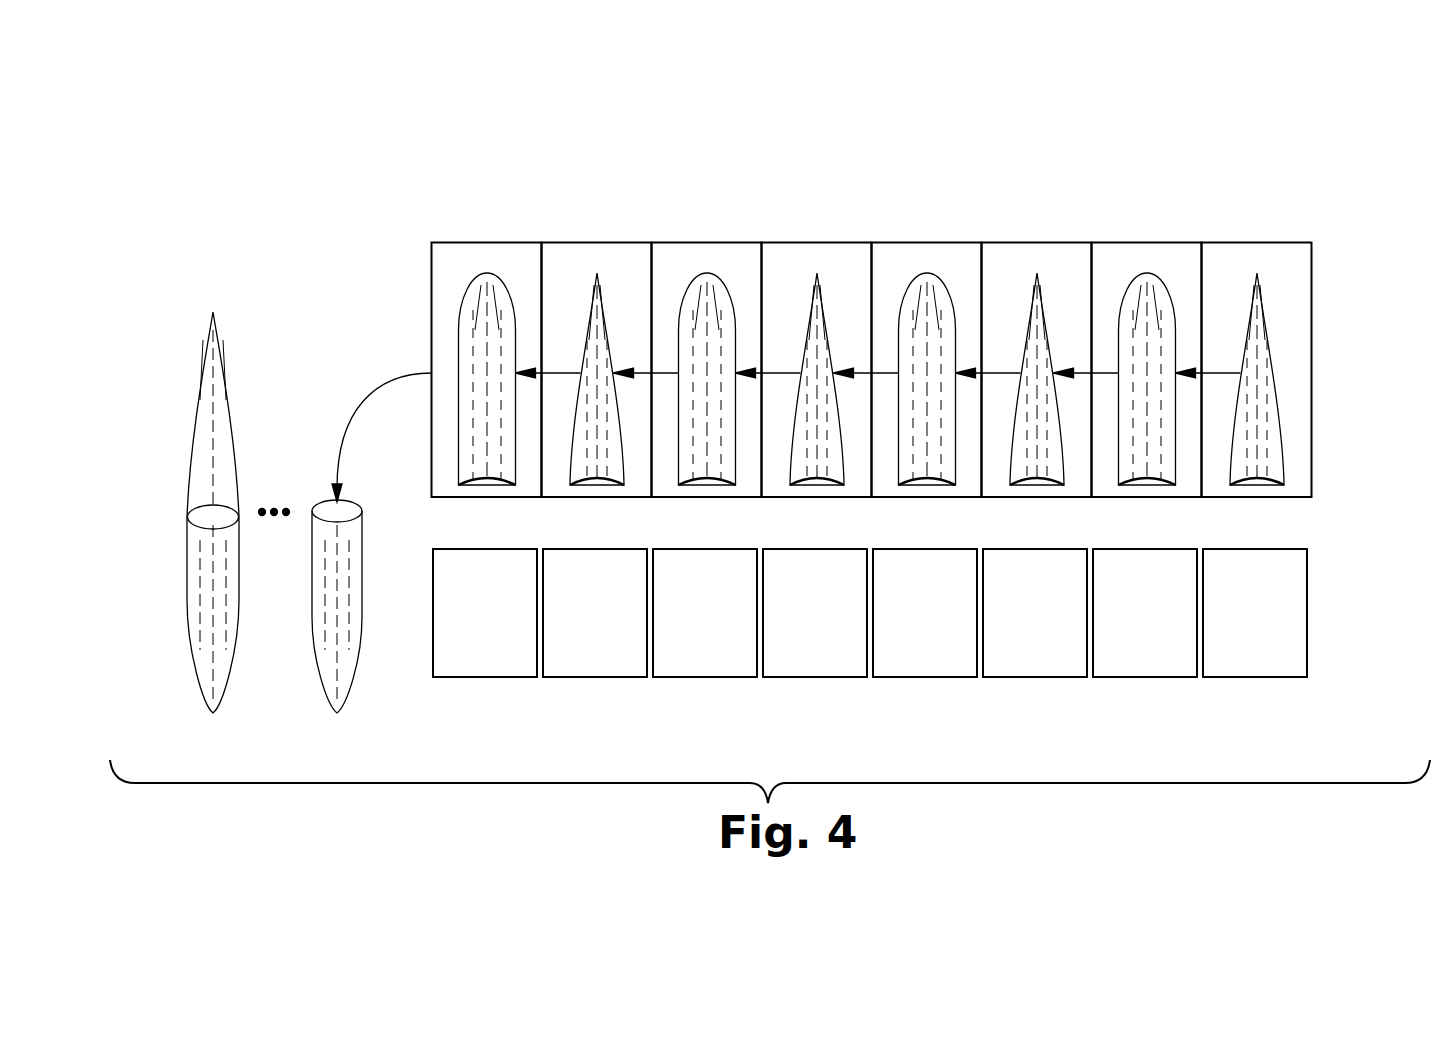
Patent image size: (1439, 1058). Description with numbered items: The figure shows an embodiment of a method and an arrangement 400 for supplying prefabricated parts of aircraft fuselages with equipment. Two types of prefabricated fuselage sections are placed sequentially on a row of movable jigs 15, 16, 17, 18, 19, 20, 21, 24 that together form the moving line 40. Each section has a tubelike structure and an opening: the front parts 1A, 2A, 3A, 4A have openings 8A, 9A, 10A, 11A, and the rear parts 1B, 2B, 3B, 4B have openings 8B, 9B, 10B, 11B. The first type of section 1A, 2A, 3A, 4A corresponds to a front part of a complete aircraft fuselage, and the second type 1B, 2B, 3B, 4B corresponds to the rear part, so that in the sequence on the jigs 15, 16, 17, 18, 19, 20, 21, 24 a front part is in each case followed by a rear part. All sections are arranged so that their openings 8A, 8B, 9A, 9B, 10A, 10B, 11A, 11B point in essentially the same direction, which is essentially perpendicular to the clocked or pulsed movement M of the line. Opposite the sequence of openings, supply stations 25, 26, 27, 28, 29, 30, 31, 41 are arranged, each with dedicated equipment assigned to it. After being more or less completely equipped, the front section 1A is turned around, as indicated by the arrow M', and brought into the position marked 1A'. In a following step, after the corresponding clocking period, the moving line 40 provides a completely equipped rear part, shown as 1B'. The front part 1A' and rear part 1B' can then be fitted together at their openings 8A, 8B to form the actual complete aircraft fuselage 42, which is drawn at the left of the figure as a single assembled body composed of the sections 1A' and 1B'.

The test arrangement 400 is at (381, 228).
The projectile 42 is at (179, 426).
The rear part of the aircraft fuselage 1B' is at (243, 420).
The front part of the aircraft fuselage 1A' is at (274, 606).
The arrow indicating turning around M' is at (382, 437).
The moving line 40 is at (1322, 462).
The movable jig 15 is at (518, 270).
The movable jig 16 is at (628, 270).
The movable jig 17 is at (738, 270).
The movable jig 18 is at (848, 270).
The movable jig 19 is at (958, 270).
The movable jig 20 is at (1068, 270).
The movable jig 21 is at (1178, 270).
The movable jig 24 is at (1288, 270).
The opening 8A is at (479, 482).
The opening 8B is at (589, 482).
The opening 9A is at (699, 482).
The opening 9B is at (809, 482).
The opening 10A is at (919, 482).
The opening 10B is at (1029, 482).
The opening 11A is at (1139, 482).
The opening 11B is at (1249, 482).
The front fuselage section 1A is at (487, 379).
The rear fuselage section 1B is at (597, 379).
The front fuselage section 2A is at (690, 362).
The rear fuselage section 2B is at (800, 445).
The front fuselage section 3A is at (910, 362).
The rear fuselage section 3B is at (1020, 445).
The front fuselage section 4A is at (1130, 362).
The rear fuselage section 4B is at (1240, 445).
The clocked or pulsed movement M is at (878, 345).
The supply station 25 is at (488, 657).
The supply station 26 is at (598, 657).
The supply station 27 is at (708, 657).
The supply station 28 is at (818, 657).
The supply station 29 is at (928, 657).
The supply station 30 is at (1038, 657).
The supply station 31 is at (1148, 657).
The supply station 41 is at (1258, 657).